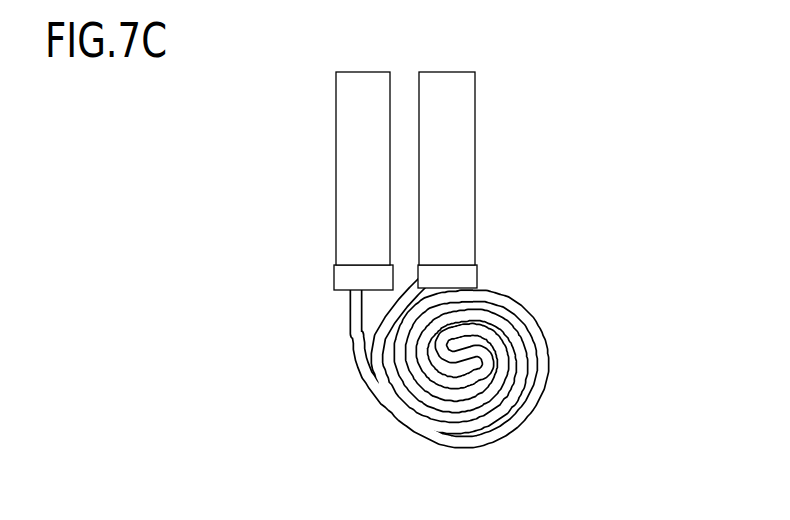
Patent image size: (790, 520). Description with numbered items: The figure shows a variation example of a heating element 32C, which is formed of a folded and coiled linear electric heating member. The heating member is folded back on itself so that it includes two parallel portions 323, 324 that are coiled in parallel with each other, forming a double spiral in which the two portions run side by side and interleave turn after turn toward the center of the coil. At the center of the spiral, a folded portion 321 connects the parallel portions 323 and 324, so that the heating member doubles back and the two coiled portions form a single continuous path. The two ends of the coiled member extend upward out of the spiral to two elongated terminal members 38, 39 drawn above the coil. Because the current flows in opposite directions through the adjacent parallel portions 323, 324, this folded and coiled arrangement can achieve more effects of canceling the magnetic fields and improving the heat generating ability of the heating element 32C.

The inlet header block 38 is at (453, 138).
The outlet header block 39 is at (346, 138).
The folded portion 321 is at (443, 335).
The parallel portion 323 is at (428, 410).
The parallel portion 324 is at (383, 400).
The heating element 32C is at (459, 287).